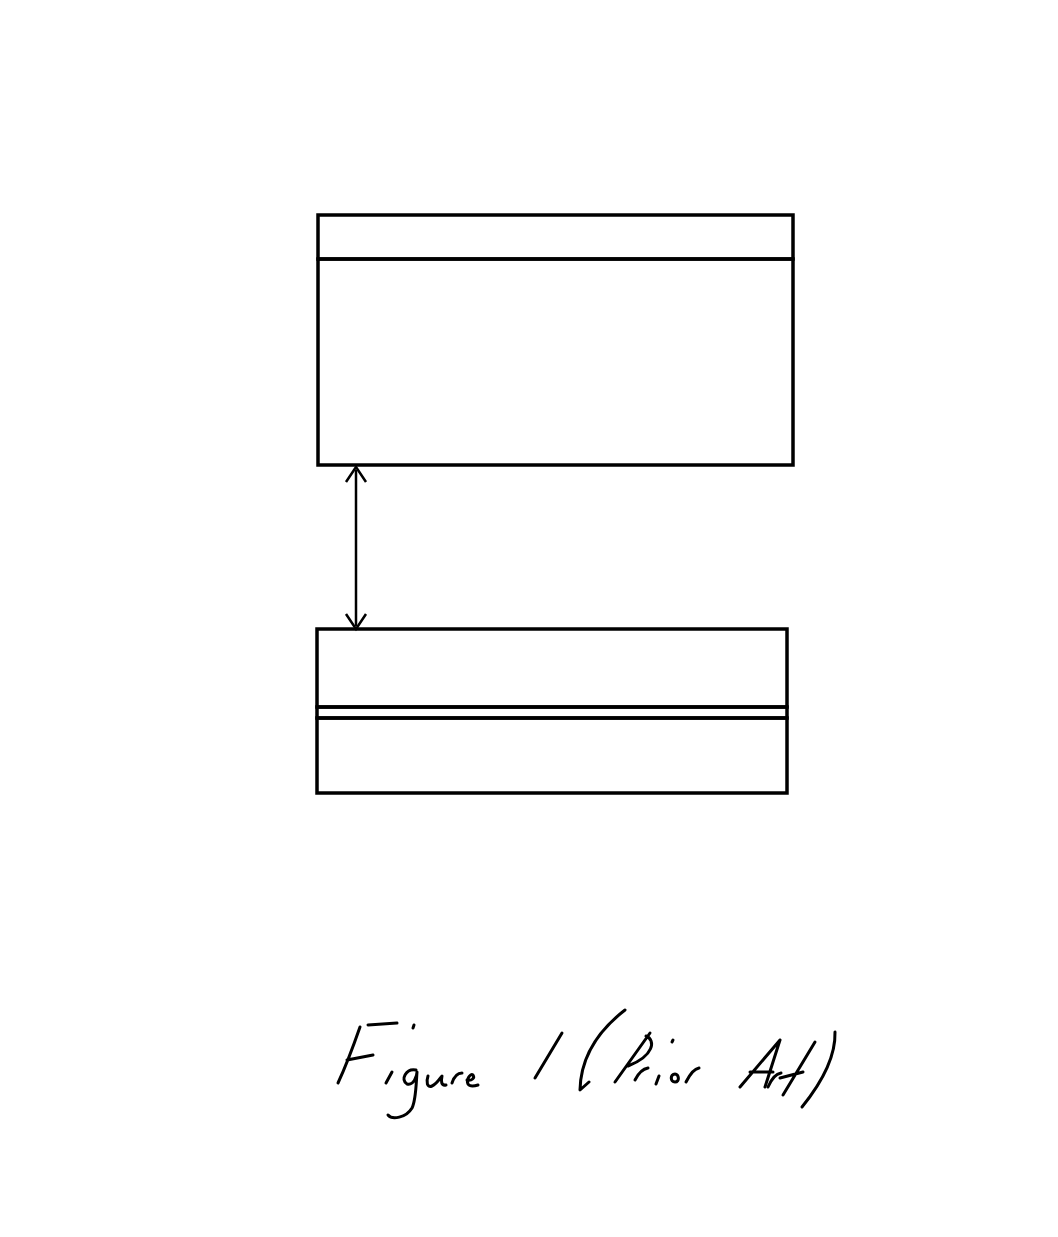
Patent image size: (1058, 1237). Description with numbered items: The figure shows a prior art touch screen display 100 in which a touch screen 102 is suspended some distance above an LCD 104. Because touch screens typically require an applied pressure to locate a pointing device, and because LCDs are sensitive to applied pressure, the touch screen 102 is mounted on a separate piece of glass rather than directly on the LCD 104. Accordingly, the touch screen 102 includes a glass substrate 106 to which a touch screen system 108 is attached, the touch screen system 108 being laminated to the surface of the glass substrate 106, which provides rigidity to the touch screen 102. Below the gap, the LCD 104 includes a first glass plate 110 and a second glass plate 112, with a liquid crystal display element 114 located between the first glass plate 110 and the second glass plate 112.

The touch screen display 100 is at (215, 325).
The touch screen 102 is at (537, 339).
The LCD 104 is at (528, 710).
The glass substrate 106 is at (619, 362).
The touch screen system 108 is at (626, 237).
The first glass plate 110 is at (613, 668).
The second glass plate 112 is at (608, 755).
The liquid crystal display element 114 is at (605, 713).